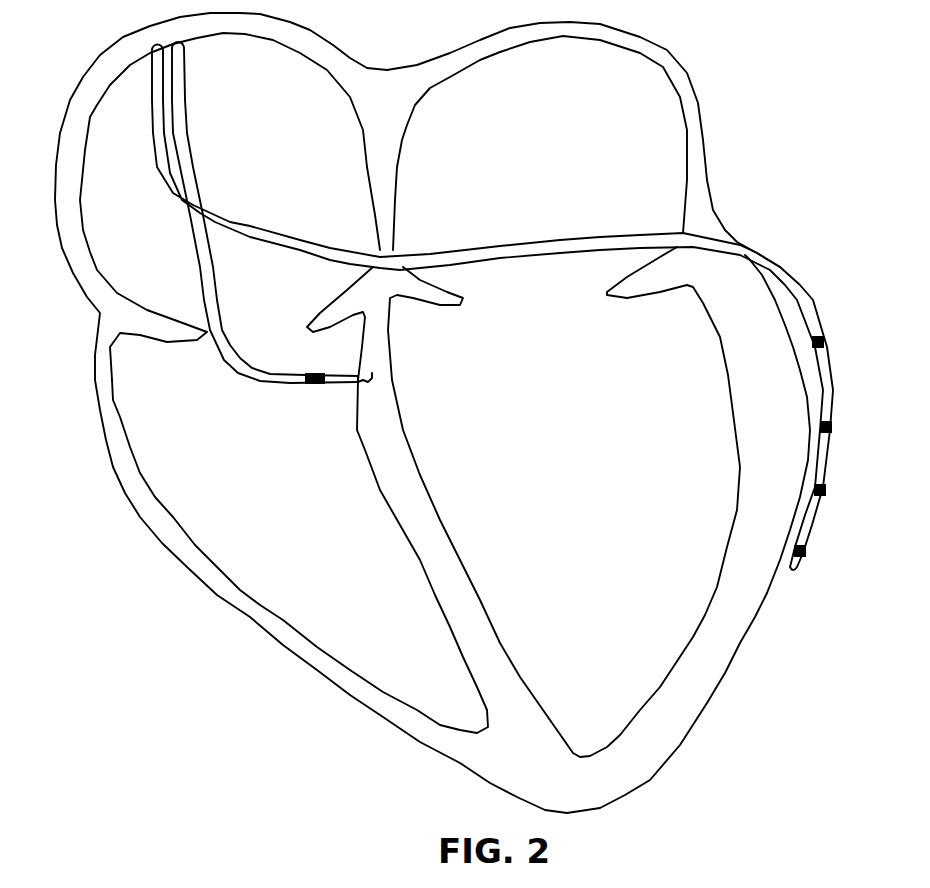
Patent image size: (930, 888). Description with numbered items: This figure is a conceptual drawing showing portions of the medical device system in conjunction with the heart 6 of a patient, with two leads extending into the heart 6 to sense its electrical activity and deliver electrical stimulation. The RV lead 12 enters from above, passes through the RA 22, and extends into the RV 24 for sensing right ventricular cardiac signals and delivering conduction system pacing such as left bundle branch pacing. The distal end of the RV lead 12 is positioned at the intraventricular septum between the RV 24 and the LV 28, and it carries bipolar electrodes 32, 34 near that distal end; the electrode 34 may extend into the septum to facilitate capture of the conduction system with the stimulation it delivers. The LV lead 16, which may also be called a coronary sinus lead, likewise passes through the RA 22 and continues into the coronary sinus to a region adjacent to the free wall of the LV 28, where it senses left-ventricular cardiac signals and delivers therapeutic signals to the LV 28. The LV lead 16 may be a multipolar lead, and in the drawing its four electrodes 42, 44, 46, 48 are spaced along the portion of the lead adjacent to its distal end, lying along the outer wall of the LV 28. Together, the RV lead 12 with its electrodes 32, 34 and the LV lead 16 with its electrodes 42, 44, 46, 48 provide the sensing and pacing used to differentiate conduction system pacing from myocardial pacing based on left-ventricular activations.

The heart 6 is at (80, 509).
The RV lead 12 is at (298, 253).
The LV lead 16 is at (523, 308).
The RA 22 is at (103, 222).
The RV 24 is at (255, 550).
The LV 28 is at (678, 615).
The electrode 32 is at (315, 385).
The electrode 34 is at (372, 378).
The electrode 42 is at (822, 340).
The electrode 44 is at (828, 428).
The electrode 46 is at (821, 488).
The electrode 48 is at (800, 550).